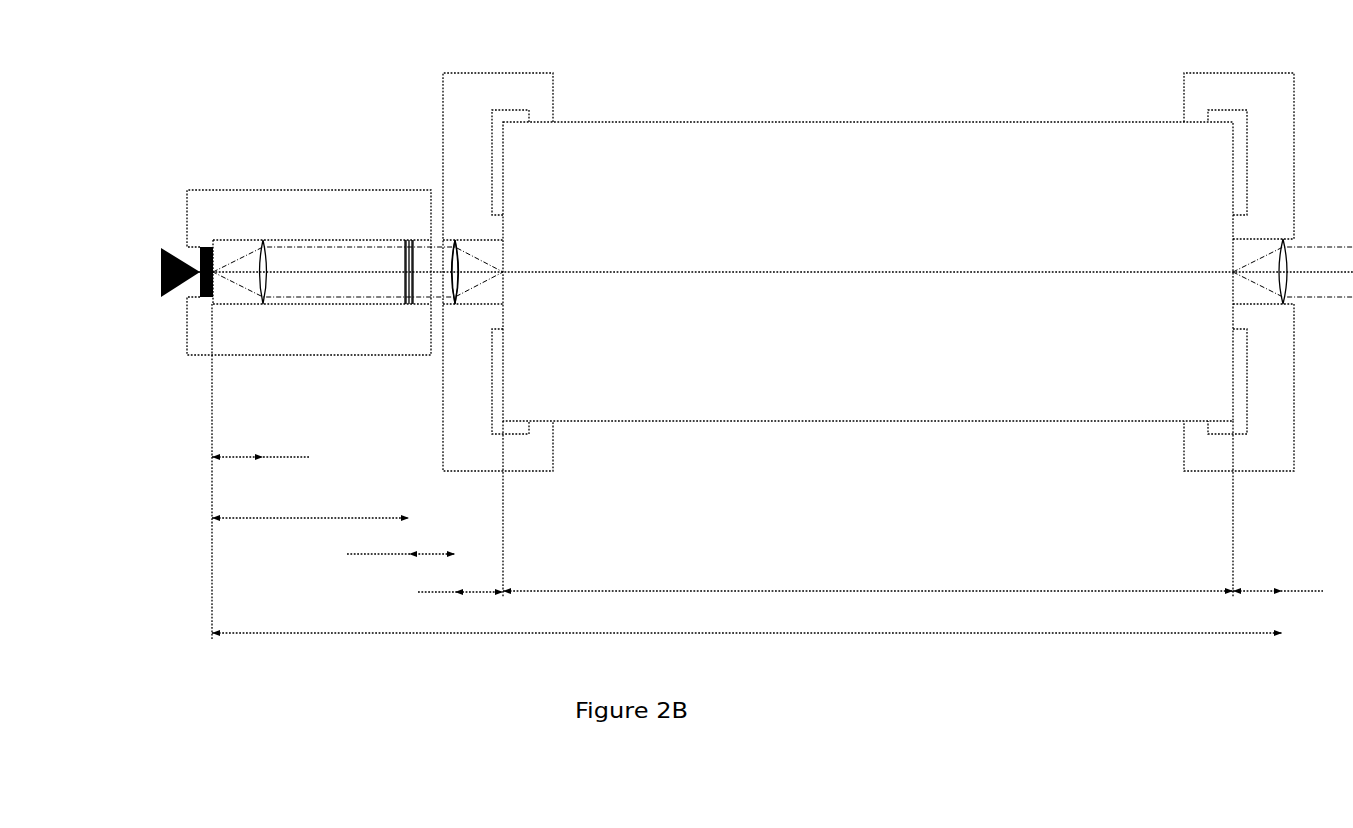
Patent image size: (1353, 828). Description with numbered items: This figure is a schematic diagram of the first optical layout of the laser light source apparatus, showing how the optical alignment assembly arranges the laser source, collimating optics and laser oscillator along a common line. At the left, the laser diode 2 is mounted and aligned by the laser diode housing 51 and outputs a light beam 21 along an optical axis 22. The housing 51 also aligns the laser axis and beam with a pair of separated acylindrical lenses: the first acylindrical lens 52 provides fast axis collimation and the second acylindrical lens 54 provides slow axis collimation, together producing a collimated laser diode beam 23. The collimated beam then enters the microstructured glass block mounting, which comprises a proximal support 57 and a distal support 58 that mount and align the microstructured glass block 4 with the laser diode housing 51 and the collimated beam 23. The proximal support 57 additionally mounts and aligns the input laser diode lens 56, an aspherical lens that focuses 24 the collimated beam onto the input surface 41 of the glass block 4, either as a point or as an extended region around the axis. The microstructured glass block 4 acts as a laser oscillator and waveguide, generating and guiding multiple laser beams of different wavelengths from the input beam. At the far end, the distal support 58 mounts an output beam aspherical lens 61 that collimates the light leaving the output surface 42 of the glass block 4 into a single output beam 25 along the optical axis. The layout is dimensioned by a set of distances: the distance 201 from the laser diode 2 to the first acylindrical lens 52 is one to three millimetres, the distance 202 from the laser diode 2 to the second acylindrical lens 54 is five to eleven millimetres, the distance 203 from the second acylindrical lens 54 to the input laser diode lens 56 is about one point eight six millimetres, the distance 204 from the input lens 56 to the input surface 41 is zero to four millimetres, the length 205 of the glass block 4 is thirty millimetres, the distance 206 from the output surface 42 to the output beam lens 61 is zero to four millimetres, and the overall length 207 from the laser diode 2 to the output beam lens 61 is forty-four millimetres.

The laser diode 2 is at (348, 321).
The microstructured glass block 4 is at (869, 234).
The light beam 21 is at (238, 252).
The optical axis 22 is at (161, 272).
The collimated laser diode beam 23 is at (436, 242).
The focusing of collimated beam 24 is at (492, 255).
The single output beam 25 is at (1347, 234).
The input surface 41 is at (510, 289).
The output surface 42 is at (1218, 281).
The laser diode housing 51 is at (372, 356).
The first acylindrical lens 52 is at (263, 460).
The second acylindrical lens 54 is at (409, 557).
The input laser diode lens 56 is at (455, 595).
The proximal support 57 is at (555, 463).
The distal support 58 is at (1184, 462).
The output beam aspherical lens 61 is at (1282, 640).
The distance from laser diode to first acylindrical lens 201 is at (261, 472).
The distance from laser diode to second acylindrical lens 202 is at (310, 506).
The distance from second acylindrical lens to input laser diode lens 203 is at (401, 542).
The distance from input laser diode lens to input surface 204 is at (459, 578).
The length of microstructured glass block 205 is at (868, 509).
The distance from output surface to output beam lens 206 is at (1278, 579).
The length from laser diode to output beam lens 207 is at (747, 622).